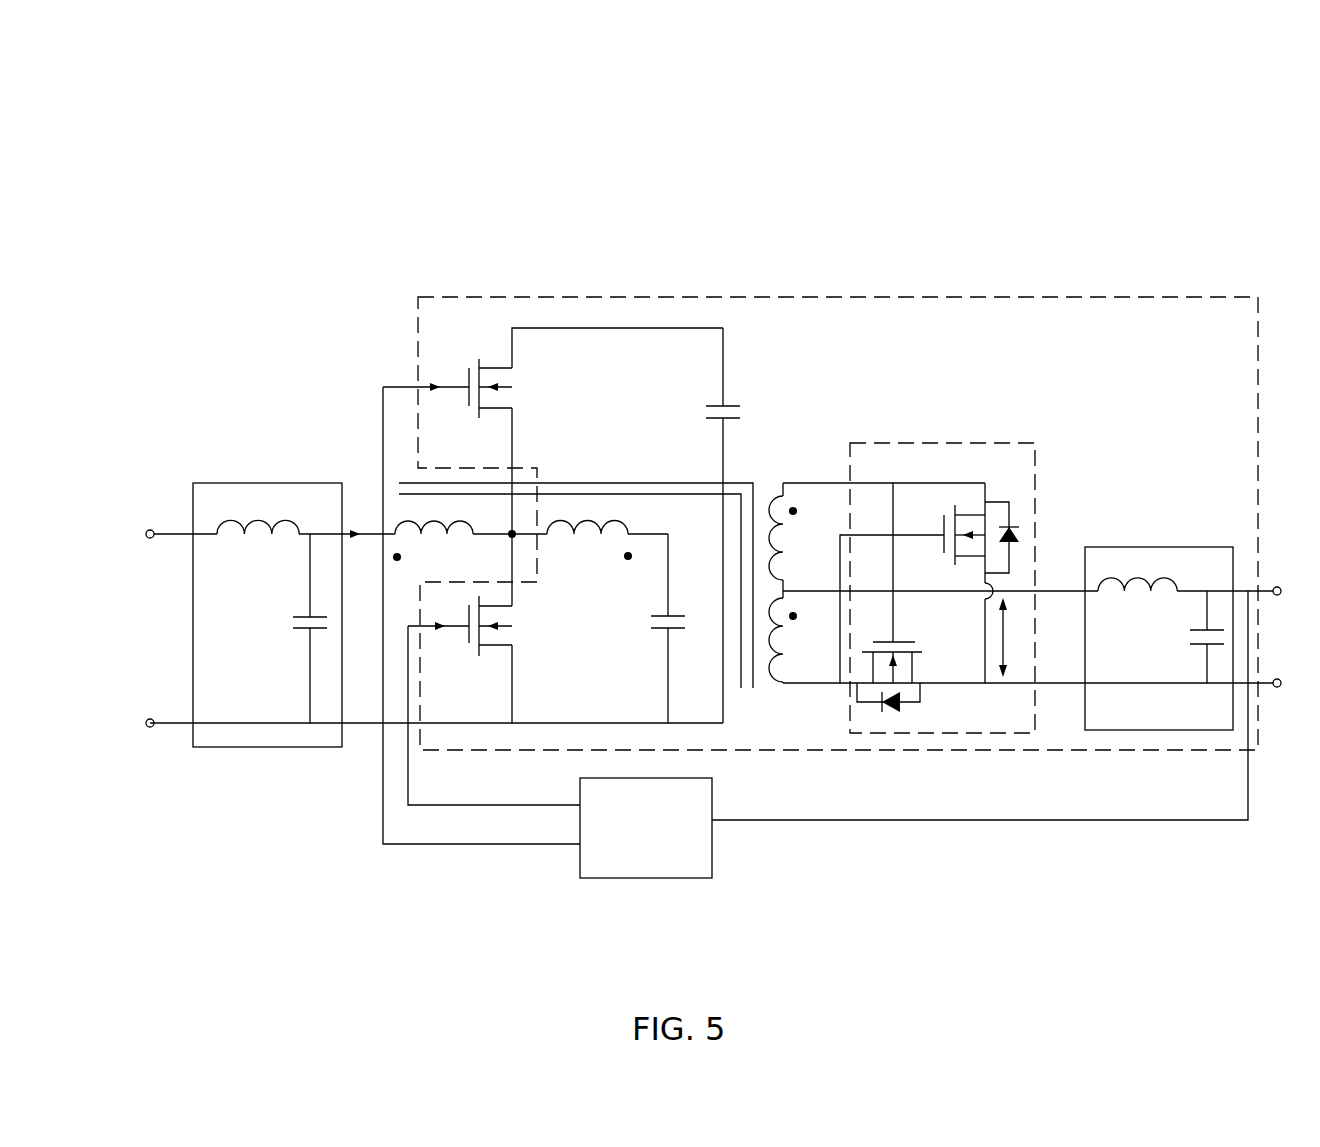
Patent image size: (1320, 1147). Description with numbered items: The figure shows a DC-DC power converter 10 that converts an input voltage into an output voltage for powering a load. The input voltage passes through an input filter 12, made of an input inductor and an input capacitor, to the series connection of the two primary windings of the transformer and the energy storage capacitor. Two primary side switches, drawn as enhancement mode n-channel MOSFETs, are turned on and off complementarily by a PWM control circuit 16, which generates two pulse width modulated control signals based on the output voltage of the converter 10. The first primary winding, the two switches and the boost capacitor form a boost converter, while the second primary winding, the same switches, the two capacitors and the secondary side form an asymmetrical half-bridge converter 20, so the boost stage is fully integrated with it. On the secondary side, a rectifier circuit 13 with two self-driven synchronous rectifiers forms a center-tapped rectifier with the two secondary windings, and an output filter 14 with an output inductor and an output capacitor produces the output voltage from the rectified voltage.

The DC-DC power converter 10 is at (560, 253).
The input filter 12 is at (307, 483).
The rectifier circuit 13 is at (993, 733).
The output filter 14 is at (1129, 732).
The PWM control circuit 16 is at (721, 847).
The asymmetrical half-bridge converter 20 is at (838, 475).